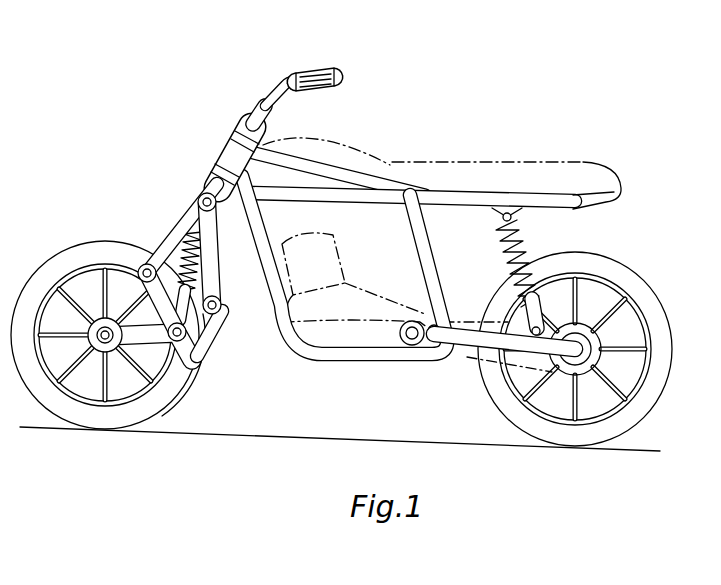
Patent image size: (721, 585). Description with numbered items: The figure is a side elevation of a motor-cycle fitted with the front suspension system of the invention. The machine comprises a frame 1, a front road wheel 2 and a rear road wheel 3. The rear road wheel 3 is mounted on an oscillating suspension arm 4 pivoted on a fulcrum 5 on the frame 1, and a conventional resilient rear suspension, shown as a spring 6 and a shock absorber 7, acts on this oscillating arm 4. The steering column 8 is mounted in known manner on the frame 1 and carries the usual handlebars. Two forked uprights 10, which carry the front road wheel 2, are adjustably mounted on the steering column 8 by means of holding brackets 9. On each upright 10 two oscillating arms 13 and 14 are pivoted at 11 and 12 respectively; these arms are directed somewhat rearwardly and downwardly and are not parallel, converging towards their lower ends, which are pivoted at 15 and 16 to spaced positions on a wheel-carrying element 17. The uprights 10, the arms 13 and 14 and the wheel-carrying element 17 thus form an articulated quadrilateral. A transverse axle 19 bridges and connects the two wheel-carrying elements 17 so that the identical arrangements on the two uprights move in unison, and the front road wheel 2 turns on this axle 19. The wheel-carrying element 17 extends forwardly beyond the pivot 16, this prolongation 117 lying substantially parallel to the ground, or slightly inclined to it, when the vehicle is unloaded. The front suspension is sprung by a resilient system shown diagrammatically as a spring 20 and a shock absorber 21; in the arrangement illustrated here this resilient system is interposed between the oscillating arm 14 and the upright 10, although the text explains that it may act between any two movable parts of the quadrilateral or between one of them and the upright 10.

The frame 1 is at (409, 184).
The front road wheel 2 is at (50, 266).
The rear road wheel 3 is at (604, 266).
The oscillating suspension arm 4 is at (468, 341).
The fulcrum 5 is at (430, 347).
The spring 6 is at (519, 241).
The shock absorber 7 is at (529, 313).
The steering column 8 is at (240, 155).
The holding brackets 9 is at (204, 177).
The forked uprights 10 is at (196, 184).
The pivot 11 is at (197, 203).
The pivot 12 is at (142, 266).
The oscillating arm 13 is at (216, 241).
The oscillating arm 14 is at (156, 306).
The pivot 15 is at (219, 303).
The pivot 16 is at (194, 376).
The wheel-carrying element 17 is at (208, 346).
The transverse axle 19 is at (86, 346).
The spring 20 is at (182, 260).
The shock absorber 21 is at (219, 331).
The prolongation 117 is at (178, 402).